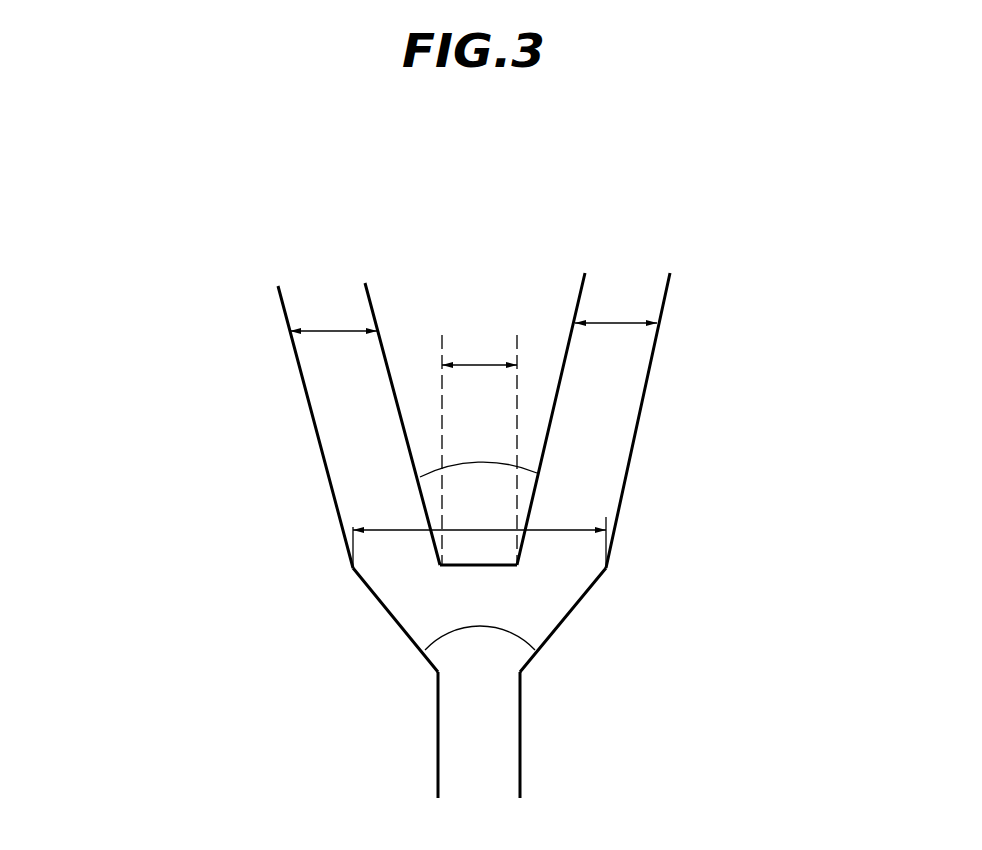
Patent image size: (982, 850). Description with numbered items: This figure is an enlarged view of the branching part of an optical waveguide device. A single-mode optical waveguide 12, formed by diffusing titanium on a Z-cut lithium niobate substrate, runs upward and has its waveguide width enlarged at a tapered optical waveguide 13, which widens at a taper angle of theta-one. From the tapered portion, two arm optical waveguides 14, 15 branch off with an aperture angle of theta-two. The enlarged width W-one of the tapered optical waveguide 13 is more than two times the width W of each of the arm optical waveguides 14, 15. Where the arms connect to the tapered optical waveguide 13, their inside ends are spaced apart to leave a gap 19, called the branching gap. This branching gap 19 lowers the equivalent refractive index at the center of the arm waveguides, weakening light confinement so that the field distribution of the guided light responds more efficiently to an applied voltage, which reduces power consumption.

The single-mode optical waveguide 12 is at (438, 748).
The tapered optical waveguide 13 is at (455, 613).
The arm optical waveguide 14 is at (635, 428).
The arm optical waveguide 15 is at (318, 445).
The gap 19 is at (472, 362).